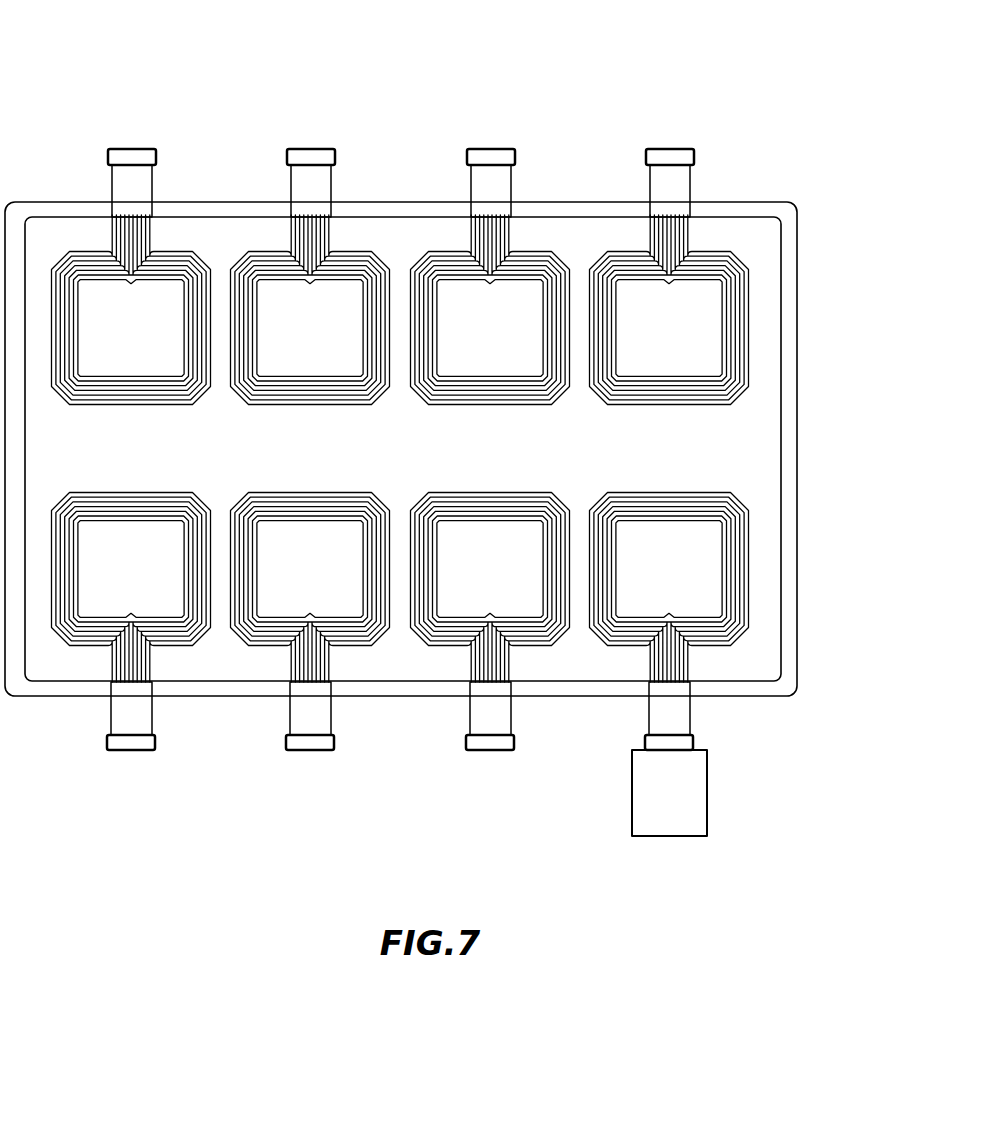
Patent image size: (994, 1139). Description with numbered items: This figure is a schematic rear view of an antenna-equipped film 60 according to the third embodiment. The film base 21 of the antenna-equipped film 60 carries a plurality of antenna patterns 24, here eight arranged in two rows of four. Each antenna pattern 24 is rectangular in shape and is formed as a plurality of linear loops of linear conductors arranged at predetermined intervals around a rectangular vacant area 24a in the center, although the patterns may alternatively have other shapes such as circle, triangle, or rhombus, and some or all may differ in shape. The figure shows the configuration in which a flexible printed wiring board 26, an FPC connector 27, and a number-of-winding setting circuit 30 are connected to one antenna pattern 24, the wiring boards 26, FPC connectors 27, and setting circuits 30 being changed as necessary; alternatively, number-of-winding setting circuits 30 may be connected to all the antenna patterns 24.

The antenna-equipped film 60 is at (390, 79).
The film base 21 is at (798, 272).
The antenna pattern 24 is at (455, 448).
The vacant area 24a is at (668, 572).
The flexible printed wiring board 26 is at (120, 186).
The FPC connector 27 is at (125, 158).
The number-of-winding setting circuit 30 is at (708, 787).